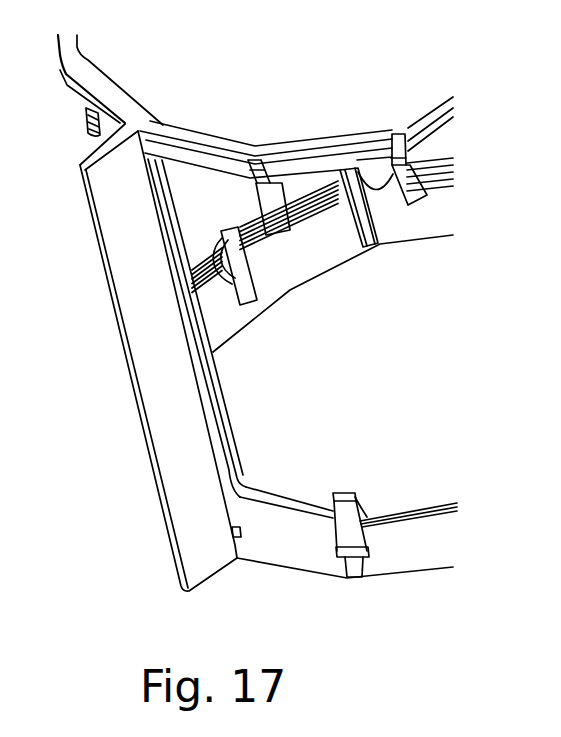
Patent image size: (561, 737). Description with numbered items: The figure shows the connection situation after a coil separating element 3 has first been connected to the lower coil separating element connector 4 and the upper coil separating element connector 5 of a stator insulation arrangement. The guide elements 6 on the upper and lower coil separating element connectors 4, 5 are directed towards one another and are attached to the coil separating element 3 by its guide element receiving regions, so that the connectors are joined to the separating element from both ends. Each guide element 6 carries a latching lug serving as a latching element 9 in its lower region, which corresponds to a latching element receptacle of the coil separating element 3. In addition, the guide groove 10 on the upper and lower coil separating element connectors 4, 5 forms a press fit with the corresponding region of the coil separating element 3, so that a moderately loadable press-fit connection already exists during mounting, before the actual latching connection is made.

The coil separating element 3 is at (123, 247).
The lower coil separating element connector 4 is at (447, 127).
The upper coil separating element connector 5 is at (443, 538).
The guide element 6 is at (266, 232).
The latching element 9 is at (250, 158).
The guide groove 10 is at (405, 152).